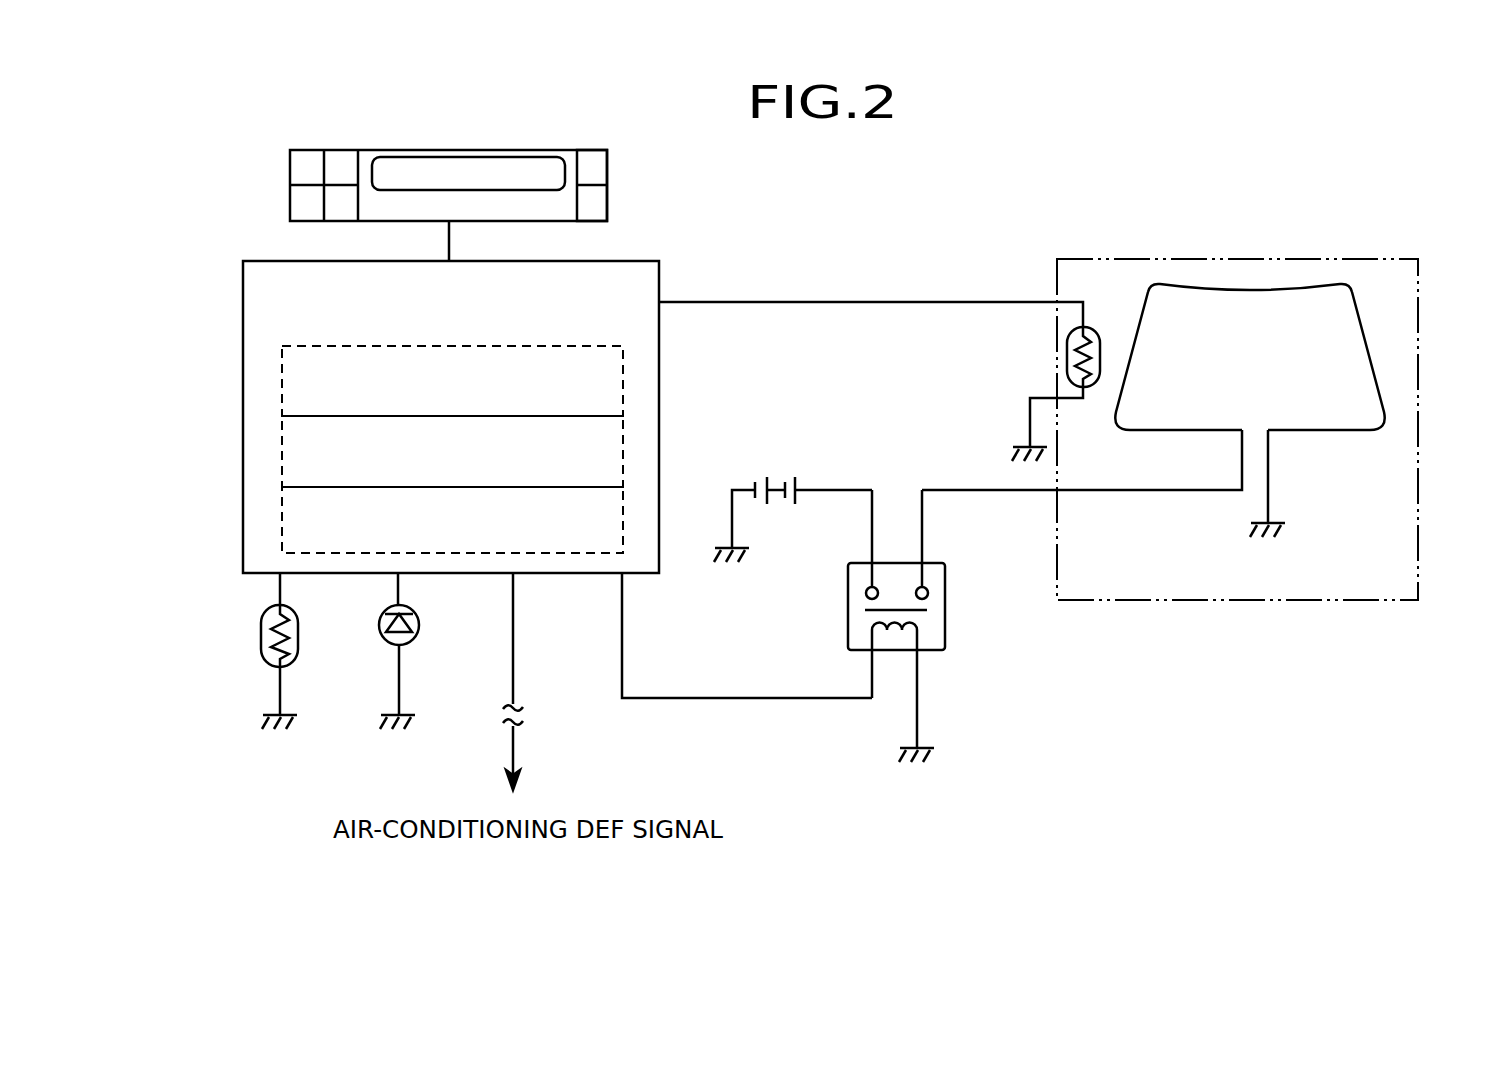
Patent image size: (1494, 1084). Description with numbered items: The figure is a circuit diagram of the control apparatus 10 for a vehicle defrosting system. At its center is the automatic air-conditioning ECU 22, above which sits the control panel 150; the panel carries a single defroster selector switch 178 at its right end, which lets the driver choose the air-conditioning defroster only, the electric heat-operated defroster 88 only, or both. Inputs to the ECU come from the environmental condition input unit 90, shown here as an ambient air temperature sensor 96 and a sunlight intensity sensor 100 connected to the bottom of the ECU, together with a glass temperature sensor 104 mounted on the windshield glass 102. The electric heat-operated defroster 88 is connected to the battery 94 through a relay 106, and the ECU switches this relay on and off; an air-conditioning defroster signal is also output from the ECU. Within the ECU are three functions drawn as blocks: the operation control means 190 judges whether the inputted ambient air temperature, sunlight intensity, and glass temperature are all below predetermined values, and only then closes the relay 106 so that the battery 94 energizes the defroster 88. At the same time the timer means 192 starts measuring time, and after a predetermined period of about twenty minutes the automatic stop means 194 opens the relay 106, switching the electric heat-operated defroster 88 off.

The control apparatus 10 is at (984, 157).
The automatic air-conditioning ECU 22 is at (614, 262).
The electric heat-operated defroster 88 is at (1296, 288).
The environmental condition input unit 90 is at (255, 651).
The battery 94 is at (796, 480).
The ambient air temperature sensor 96 is at (259, 626).
The sunlight intensity sensor 100 is at (419, 616).
The windshield glass 102 is at (1418, 408).
The glass temperature sensor 104 is at (1097, 328).
The relay 106 is at (945, 624).
The control panel 150 is at (508, 150).
The defroster selector switch 178 is at (607, 168).
The operation control means 190 is at (282, 383).
The timer means 192 is at (282, 447).
The automatic stop means 194 is at (282, 523).